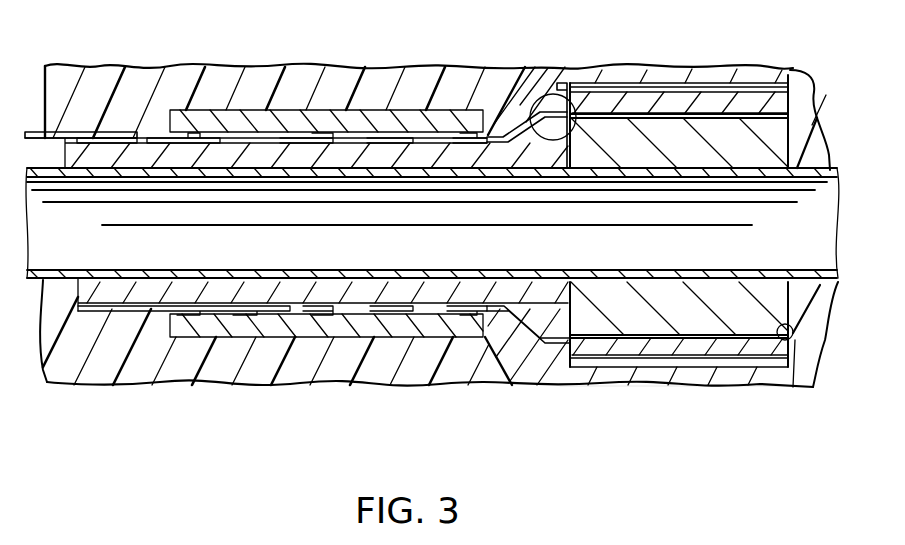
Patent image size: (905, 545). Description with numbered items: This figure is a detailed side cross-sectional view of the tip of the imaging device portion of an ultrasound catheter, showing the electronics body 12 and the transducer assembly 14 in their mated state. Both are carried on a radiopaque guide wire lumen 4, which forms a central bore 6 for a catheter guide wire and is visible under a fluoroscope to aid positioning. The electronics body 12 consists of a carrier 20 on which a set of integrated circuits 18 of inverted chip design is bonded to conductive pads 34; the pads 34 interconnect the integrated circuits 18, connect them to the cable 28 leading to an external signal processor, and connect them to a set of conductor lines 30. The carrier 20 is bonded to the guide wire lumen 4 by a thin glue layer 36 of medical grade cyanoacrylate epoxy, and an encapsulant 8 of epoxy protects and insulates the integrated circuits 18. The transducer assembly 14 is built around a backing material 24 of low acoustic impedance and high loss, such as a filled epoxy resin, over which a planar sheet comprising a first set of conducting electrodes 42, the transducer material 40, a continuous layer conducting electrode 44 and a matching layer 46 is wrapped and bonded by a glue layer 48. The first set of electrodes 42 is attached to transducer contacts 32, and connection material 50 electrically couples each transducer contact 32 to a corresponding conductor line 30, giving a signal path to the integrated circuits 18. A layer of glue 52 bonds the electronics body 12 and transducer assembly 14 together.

The radiopaque guide wire lumen 4 is at (37, 280).
The central bore 6 is at (816, 249).
The encapsulant 8 is at (177, 82).
The electronics body 12 is at (307, 346).
The transducer assembly 14 is at (657, 385).
The integrated circuits 18 is at (198, 322).
The carrier 20 is at (265, 132).
The backing material 24 is at (640, 327).
The cable 28 is at (32, 130).
The conductor lines 30 is at (525, 68).
The transducer contacts 32 is at (573, 66).
The conductive pads 34 is at (150, 136).
The glue layer 36 is at (147, 132).
The transducer material 40 is at (688, 102).
The first set of conducting electrodes 42 is at (755, 367).
The continuous layer conducting electrode 44 is at (797, 70).
The matching layer 46 is at (652, 68).
The glue layer 48 is at (812, 345).
The connection material 50 is at (567, 83).
The layer of glue 52 is at (550, 94).